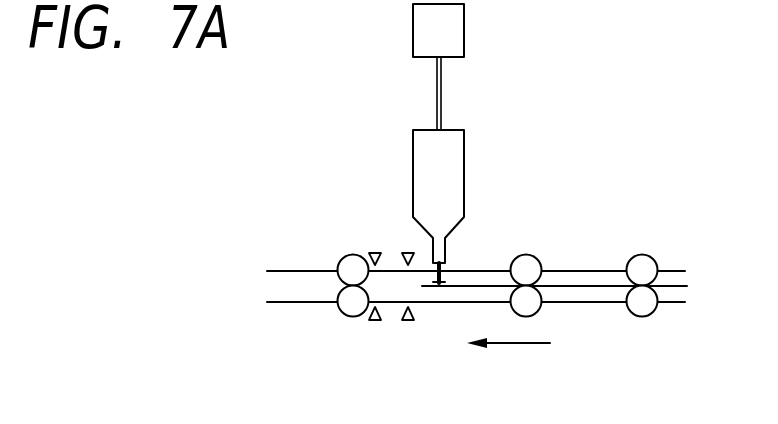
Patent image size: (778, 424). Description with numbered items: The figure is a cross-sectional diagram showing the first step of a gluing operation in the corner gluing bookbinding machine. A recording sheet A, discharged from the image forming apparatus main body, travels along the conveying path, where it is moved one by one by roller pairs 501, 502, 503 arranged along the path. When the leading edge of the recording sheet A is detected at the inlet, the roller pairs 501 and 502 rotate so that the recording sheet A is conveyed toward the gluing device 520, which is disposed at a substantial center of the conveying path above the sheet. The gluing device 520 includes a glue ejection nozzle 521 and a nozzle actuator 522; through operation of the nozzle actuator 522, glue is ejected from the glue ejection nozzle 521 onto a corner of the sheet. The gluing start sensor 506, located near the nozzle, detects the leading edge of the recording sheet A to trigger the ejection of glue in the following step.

The recording sheet A is at (585, 288).
The roller pair 501 is at (645, 255).
The roller pair 502 is at (530, 255).
The roller pair 503 is at (362, 255).
The gluing start sensor 506 is at (408, 322).
The gluing device 520 is at (389, 102).
The glue ejection nozzle 521 is at (457, 168).
The nozzle actuator 522 is at (455, 32).